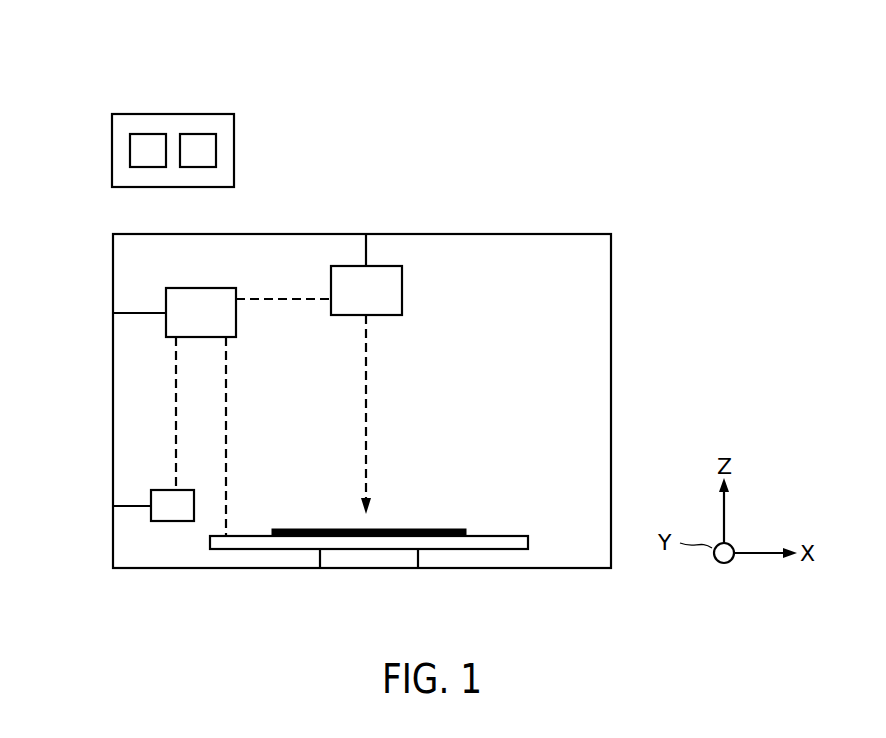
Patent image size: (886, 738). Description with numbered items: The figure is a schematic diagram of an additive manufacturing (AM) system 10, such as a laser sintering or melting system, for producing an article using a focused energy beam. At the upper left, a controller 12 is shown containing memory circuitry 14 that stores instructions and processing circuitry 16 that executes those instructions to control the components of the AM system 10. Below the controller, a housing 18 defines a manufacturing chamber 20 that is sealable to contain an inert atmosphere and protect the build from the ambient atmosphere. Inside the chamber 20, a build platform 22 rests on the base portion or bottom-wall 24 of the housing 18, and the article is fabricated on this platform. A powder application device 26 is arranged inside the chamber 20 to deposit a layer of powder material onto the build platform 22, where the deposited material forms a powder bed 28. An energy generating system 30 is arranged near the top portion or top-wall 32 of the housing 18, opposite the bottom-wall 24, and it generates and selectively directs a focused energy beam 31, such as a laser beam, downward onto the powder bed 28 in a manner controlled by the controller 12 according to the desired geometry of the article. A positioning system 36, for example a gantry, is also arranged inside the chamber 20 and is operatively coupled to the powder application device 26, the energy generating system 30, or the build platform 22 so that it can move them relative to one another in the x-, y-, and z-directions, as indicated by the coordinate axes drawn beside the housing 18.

The AM system 10 is at (132, 55).
The controller 12 is at (180, 114).
The memory circuitry 14 is at (112, 150).
The processing circuitry 16 is at (216, 150).
The housing 18 is at (612, 297).
The manufacturing chamber 20 is at (500, 381).
The build platform 22 is at (505, 535).
The bottom-wall 24 is at (550, 569).
The powder application device 26 is at (185, 489).
The powder bed 28 is at (440, 528).
The energy generating system 30 is at (403, 289).
The focused energy beam 31 is at (368, 388).
The top-wall 32 is at (462, 234).
The positioning system 36 is at (203, 287).